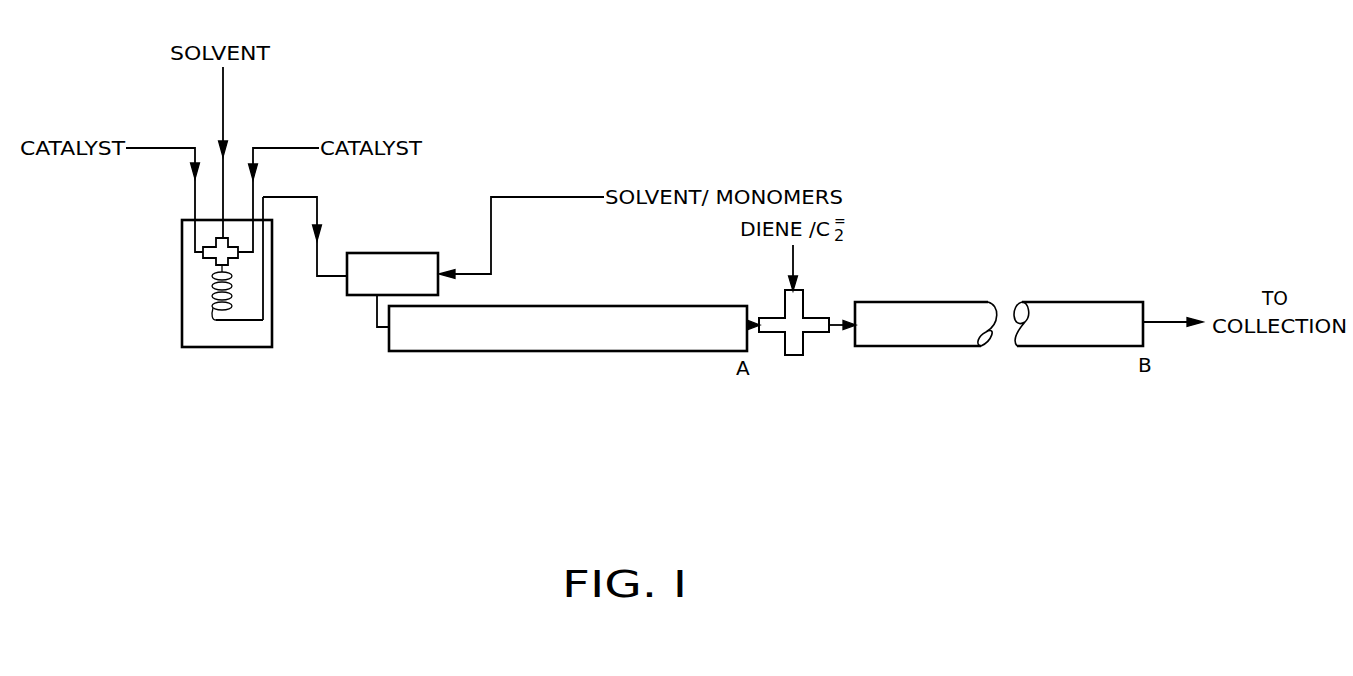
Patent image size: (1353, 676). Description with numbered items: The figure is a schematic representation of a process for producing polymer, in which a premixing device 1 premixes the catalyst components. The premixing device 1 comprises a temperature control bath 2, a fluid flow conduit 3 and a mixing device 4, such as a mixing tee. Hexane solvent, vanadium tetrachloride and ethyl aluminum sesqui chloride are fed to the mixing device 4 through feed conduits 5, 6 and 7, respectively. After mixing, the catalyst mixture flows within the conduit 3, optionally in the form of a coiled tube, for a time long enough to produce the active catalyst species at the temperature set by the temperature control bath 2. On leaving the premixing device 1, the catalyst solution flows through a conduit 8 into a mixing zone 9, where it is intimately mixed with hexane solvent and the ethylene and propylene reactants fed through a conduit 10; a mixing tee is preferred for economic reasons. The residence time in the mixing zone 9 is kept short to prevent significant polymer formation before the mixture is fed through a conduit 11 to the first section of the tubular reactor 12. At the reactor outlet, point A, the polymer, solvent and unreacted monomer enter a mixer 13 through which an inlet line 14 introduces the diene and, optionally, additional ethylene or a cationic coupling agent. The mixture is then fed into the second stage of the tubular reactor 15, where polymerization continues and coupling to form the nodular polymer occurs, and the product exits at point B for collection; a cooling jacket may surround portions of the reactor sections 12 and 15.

The premixing device 1 is at (168, 305).
The temperature control bath 2 is at (261, 329).
The fluid flow conduit 3 is at (212, 322).
The mixing device 4 is at (203, 255).
The feed conduit 5 is at (223, 88).
The feed conduit 6 is at (150, 148).
The feed conduit 7 is at (280, 148).
The conduit 8 is at (290, 197).
The mixing zone 9 is at (393, 252).
The conduit 10 is at (538, 197).
The conduit 11 is at (376, 316).
The first section of tubular reactor 12 is at (730, 352).
The mixer 13 is at (794, 355).
The inlet line 14 is at (790, 270).
The second stage of tubular reactor 15 is at (918, 347).